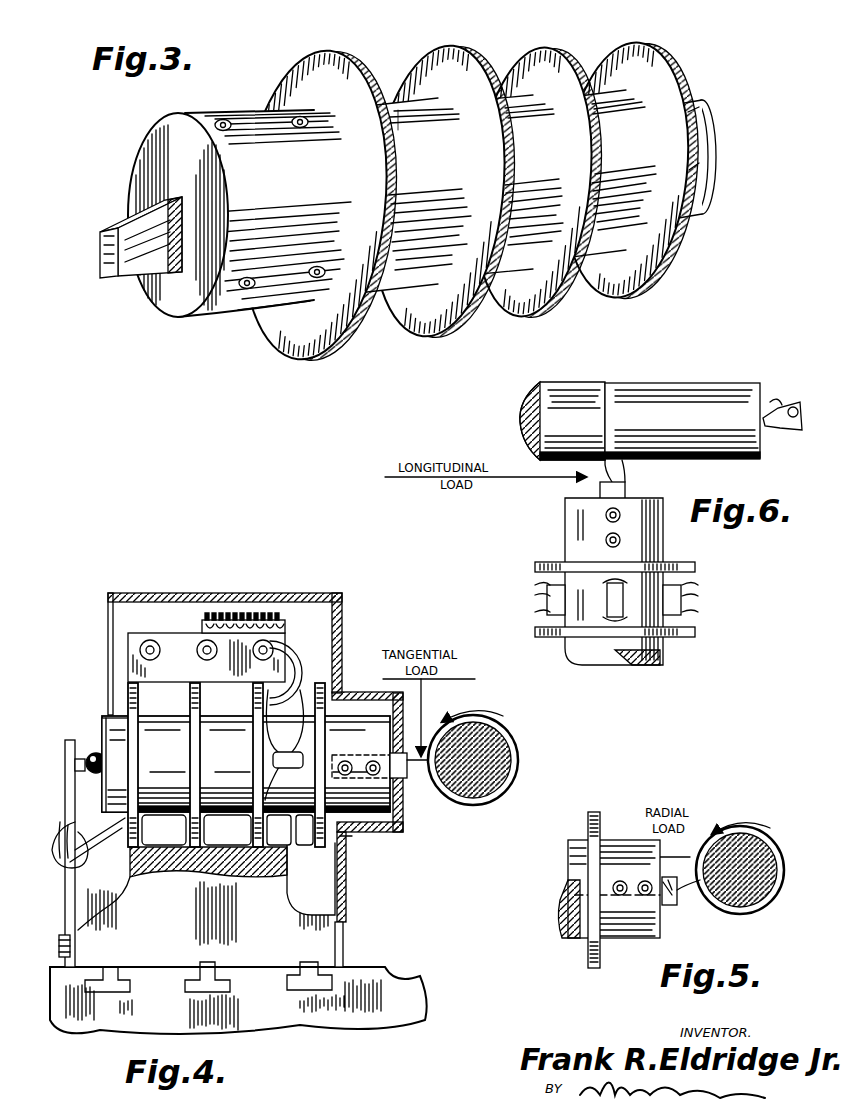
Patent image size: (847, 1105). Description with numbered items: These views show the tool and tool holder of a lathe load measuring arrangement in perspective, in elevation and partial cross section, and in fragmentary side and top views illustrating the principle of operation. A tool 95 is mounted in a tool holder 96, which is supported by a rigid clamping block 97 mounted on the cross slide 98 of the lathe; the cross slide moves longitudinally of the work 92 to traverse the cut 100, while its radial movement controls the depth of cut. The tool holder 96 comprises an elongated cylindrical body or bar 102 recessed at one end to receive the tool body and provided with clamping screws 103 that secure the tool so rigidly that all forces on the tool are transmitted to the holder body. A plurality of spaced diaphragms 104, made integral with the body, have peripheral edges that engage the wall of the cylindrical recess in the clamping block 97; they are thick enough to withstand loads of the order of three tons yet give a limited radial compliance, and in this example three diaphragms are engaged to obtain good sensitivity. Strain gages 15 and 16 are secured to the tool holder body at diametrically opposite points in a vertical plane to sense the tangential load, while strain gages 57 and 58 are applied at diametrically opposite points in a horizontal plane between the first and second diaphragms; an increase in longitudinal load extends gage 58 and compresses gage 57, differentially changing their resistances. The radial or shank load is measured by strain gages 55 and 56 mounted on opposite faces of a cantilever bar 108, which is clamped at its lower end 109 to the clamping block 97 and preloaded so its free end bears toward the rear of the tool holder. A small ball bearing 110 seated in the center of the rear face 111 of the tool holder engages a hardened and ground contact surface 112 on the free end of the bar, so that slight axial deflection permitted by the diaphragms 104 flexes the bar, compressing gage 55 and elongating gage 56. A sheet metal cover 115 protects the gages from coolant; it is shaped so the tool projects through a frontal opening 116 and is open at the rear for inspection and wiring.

In FIG. 4, the strain gage 15 is at (300, 766).
In FIG. 6, the strain gage 16 is at (640, 607).
In FIG. 4, the strain gage 16 is at (300, 698).
In FIG. 4, the strain gage 55 is at (65, 840).
In FIG. 4, the strain gage 56 is at (80, 855).
In FIG. 6, the strain gage 57 is at (684, 600).
In FIG. 4, the strain gage 57 is at (348, 836).
In FIG. 6, the strain gage 58 is at (546, 600).
In FIG. 6, the work 92 is at (665, 400).
In FIG. 5, the work 92 is at (766, 908).
In FIG. 4, the work 92 is at (515, 760).
In FIG. 6, the tool 95 is at (622, 492).
In FIG. 5, the tool 95 is at (674, 902).
In FIG. 4, the tool 95 is at (410, 779).
In FIG. 3, the tool holder 96 is at (408, 191).
In FIG. 6, the tool holder 96 is at (568, 525).
In FIG. 5, the tool holder 96 is at (618, 938).
In FIG. 4, the tool holder 96 is at (353, 716).
In FIG. 4, the clamping block 97 is at (312, 922).
In FIG. 4, the cross slide 98 is at (365, 978).
In FIG. 6, the cut 100 is at (618, 392).
In FIG. 3, the cylindrical body 102 is at (398, 124).
In FIG. 3, the clamping screws 103 is at (246, 115).
In FIG. 6, the clamping screws 103 is at (620, 541).
In FIG. 5, the clamping screws 103 is at (642, 882).
In FIG. 4, the clamping screws 103 is at (350, 776).
In FIG. 3, the diaphragms 104 is at (322, 54).
In FIG. 6, the diaphragms 104 is at (695, 566).
In FIG. 5, the diaphragms 104 is at (596, 968).
In FIG. 4, the diaphragms 104 is at (128, 692).
In FIG. 4, the cantilever bar 108 is at (69, 793).
In FIG. 4, the lower end 109 is at (62, 938).
In FIG. 4, the ball bearing 110 is at (105, 716).
In FIG. 4, the rear face 111 is at (128, 700).
In FIG. 4, the contact surface 112 is at (86, 762).
In FIG. 4, the cover 115 is at (278, 593).
In FIG. 4, the frontal opening 116 is at (404, 745).